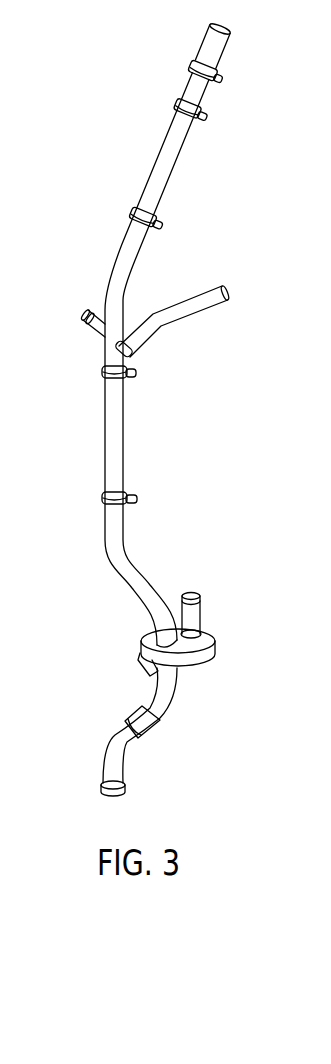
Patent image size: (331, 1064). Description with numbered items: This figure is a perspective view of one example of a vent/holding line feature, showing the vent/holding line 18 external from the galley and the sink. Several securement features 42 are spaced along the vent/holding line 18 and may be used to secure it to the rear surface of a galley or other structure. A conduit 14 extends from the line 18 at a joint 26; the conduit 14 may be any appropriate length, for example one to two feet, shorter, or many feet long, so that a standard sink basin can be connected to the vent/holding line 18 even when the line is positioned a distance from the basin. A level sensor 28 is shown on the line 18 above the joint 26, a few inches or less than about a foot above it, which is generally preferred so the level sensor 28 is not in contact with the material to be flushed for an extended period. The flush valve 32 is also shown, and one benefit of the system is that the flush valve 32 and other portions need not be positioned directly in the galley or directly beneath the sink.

The vent/holding line 18 is at (241, 199).
The securement features 42 is at (103, 370).
The conduit 14 is at (193, 298).
The joint 26 is at (131, 355).
The level sensor 28 is at (85, 311).
The flush valve 32 is at (216, 646).